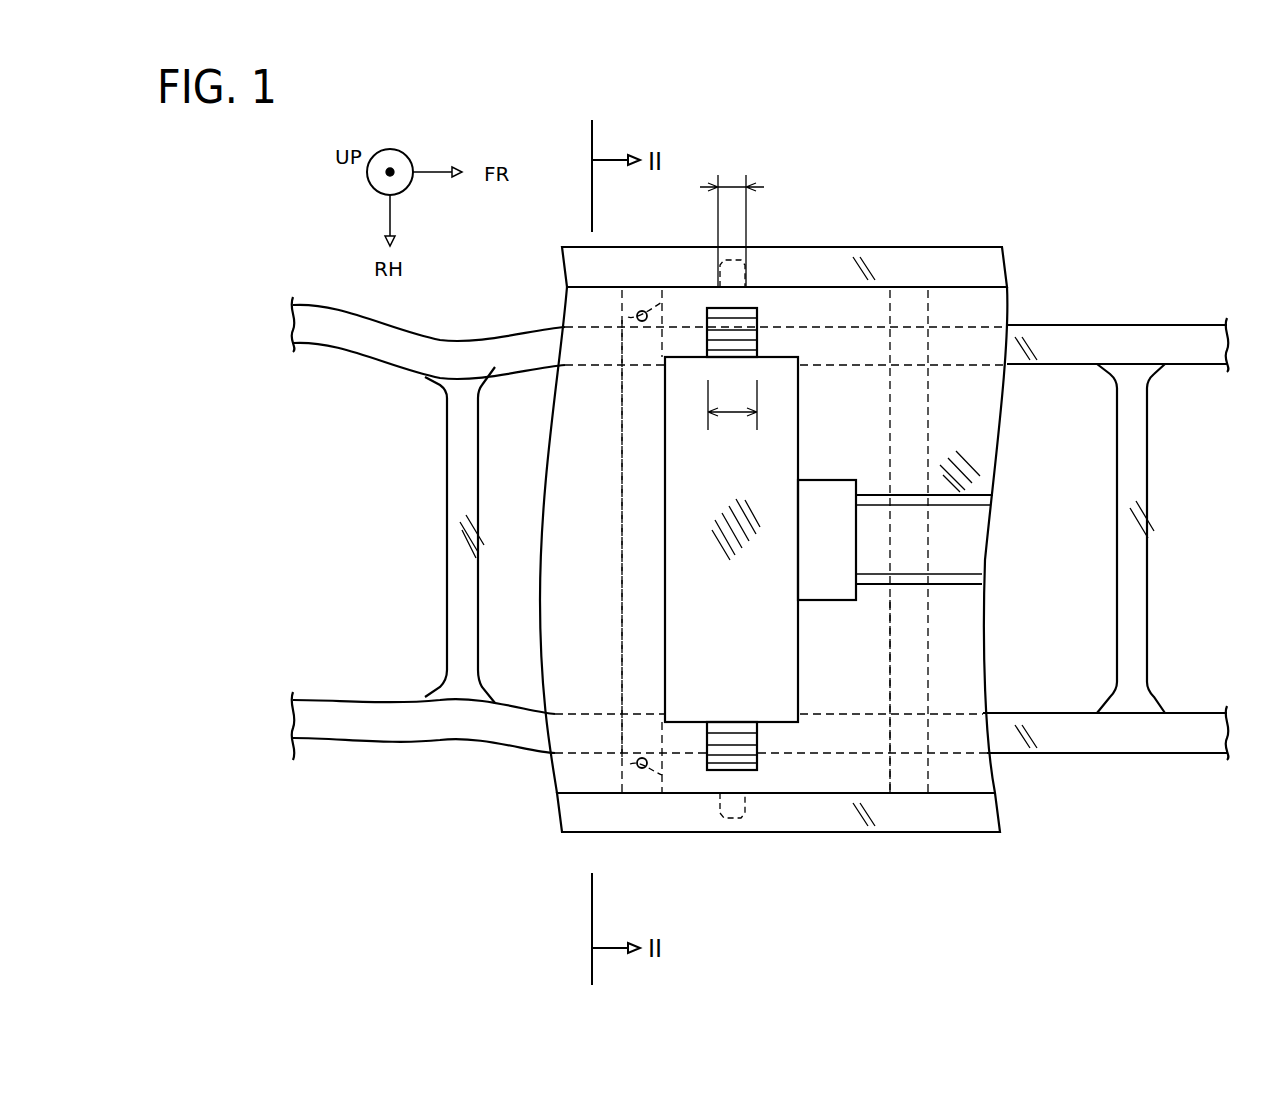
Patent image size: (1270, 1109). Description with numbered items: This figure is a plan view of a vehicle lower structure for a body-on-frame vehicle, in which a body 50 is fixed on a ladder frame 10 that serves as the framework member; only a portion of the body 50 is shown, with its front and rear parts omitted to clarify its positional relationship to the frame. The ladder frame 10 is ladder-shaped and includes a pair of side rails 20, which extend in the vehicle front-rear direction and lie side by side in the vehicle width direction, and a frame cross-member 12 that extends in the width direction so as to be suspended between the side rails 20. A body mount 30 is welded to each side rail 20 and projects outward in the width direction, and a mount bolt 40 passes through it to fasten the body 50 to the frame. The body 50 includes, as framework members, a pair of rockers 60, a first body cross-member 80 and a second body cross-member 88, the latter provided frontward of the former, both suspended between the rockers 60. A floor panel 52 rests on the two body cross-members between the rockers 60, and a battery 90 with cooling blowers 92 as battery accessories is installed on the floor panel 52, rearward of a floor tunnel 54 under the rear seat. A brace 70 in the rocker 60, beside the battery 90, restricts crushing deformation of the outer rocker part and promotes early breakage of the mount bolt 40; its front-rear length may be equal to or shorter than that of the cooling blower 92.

The ladder frame 10 is at (1163, 308).
The frame cross-member 12 is at (460, 480).
The side rail 20 is at (1048, 338).
The body mount 30 is at (628, 317).
The mount bolt 40 is at (645, 310).
The body 50 is at (837, 230).
The floor panel 52 is at (592, 450).
The floor tunnel 54 is at (965, 543).
The rocker 60 is at (933, 258).
The brace 70 is at (732, 258).
The first body cross-member 80 is at (635, 553).
The second body cross-member 88 is at (910, 678).
The battery 90 is at (788, 452).
The cooling blower 92 is at (758, 338).